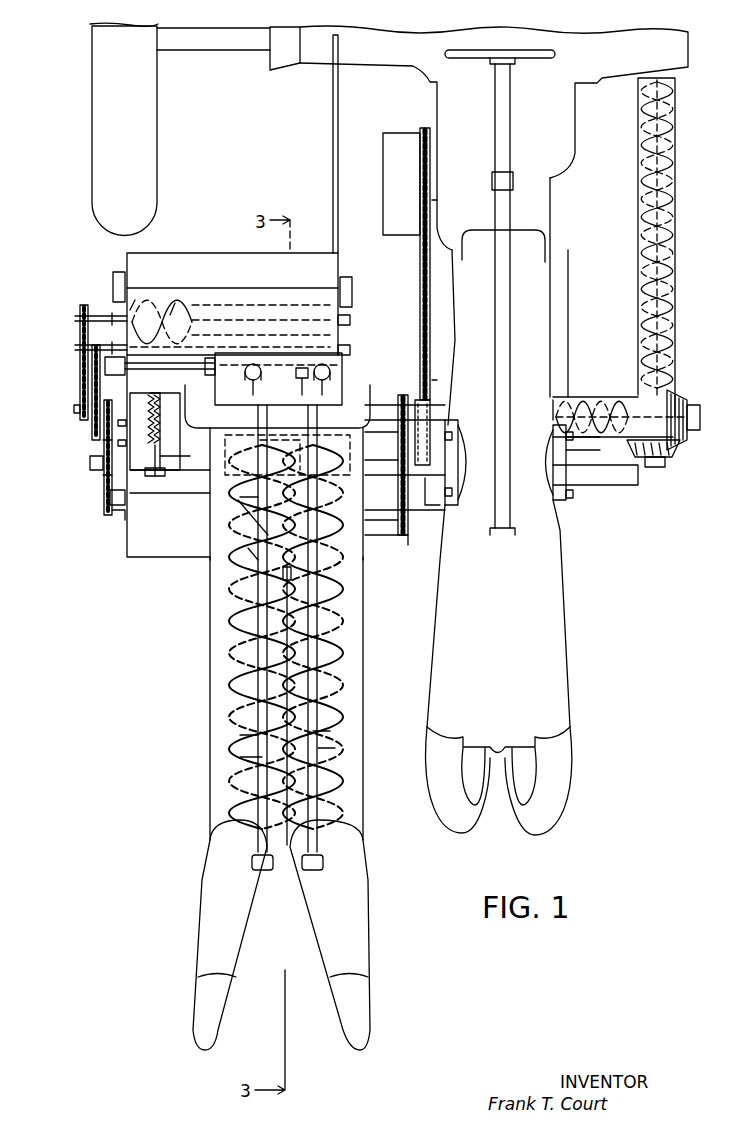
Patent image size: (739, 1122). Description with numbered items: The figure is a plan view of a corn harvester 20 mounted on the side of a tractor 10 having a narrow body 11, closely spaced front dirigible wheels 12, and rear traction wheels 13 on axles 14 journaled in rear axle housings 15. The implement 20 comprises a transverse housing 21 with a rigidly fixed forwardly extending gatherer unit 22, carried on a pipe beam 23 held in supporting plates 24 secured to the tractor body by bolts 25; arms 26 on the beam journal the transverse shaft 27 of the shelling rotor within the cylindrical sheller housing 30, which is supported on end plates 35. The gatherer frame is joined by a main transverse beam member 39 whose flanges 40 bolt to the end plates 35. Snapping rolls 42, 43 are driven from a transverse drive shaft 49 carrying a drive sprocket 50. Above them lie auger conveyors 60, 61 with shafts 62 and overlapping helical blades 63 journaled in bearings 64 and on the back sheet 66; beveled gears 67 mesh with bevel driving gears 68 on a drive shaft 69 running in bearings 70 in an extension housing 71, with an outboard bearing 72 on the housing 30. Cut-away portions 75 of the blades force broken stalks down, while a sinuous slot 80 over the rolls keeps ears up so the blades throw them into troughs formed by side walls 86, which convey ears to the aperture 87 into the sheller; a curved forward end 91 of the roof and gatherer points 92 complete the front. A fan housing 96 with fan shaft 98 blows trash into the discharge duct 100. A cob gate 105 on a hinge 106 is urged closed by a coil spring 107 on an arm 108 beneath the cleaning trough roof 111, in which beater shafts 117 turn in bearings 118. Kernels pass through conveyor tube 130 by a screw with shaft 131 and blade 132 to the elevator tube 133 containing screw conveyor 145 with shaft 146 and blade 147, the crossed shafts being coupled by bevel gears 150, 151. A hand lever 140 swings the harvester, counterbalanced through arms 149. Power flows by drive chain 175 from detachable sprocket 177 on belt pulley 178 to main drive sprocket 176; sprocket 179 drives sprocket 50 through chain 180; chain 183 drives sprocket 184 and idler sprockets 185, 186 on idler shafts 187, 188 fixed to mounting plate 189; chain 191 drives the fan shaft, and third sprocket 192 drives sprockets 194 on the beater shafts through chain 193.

The tractor 10 is at (608, 592).
The tractor body 11 is at (508, 646).
The front dirigible wheels 12 is at (525, 818).
The rear traction wheels 13 is at (98, 218).
The axles 14 is at (216, 43).
The rear axle housings 15 is at (381, 60).
The corn harvester 20 is at (107, 607).
The housing 21 is at (100, 292).
The gatherer unit 22 is at (197, 692).
The pipe beam 23 is at (91, 463).
The supporting plates 24 is at (458, 462).
The bolts 25 is at (453, 440).
The arms 26 is at (110, 448).
The transverse shaft 27 is at (162, 398).
The sheller housing 30 is at (210, 472).
The end plates 35 is at (346, 276).
The main transverse beam member 39 is at (210, 500).
The flanges 40 is at (128, 502).
The snapping roll 42 is at (256, 734).
The snapping roll 43 is at (330, 749).
The transverse drive shaft 49 is at (380, 536).
The drive sprocket 50 is at (406, 538).
The auger conveyor 60 is at (249, 635).
The auger conveyor 61 is at (333, 617).
The auger shafts 62 is at (256, 706).
The helical blade 63 is at (262, 796).
The journal bearings 64 is at (252, 865).
The back sheet 66 is at (248, 423).
The beveled gears 67 is at (299, 380).
The bevel driving gears 68 is at (249, 379).
The transverse drive shaft 69 is at (183, 361).
The bearings 70 is at (221, 382).
The extension housing 71 is at (352, 350).
The outboard bearing 72 is at (125, 366).
The cut-away portions 75 is at (291, 664).
The slot 80 is at (256, 758).
The side walls 86 is at (210, 614).
The aperture 87 is at (301, 441).
The curved forward end 91 is at (250, 548).
The gatherer point 92 is at (205, 961).
The fan housing 96 is at (190, 556).
The fan shaft 98 is at (118, 512).
The discharge duct 100 is at (224, 280).
The cob gate 105 is at (170, 420).
The hinge 106 is at (158, 478).
The coil spring 107 is at (172, 442).
The arm 108 is at (168, 472).
The roof 111 is at (283, 293).
The supporting shaft 117 is at (231, 322).
The bearings 118 is at (350, 322).
The conveyor tube 130 is at (568, 392).
The screw conveyor shaft 131 is at (600, 395).
The helical blade 132 is at (588, 398).
The elevator tube 133 is at (638, 238).
The hand-actuated lever 140 is at (333, 100).
The screw conveyor 145 is at (666, 296).
The elevator shaft 146 is at (668, 222).
The helical blade 147 is at (668, 253).
The arms 149 is at (113, 280).
The bevel gear 150 is at (683, 394).
The bevel gear 151 is at (665, 462).
The drive chain 175 is at (420, 282).
The main drive sprocket 176 is at (431, 420).
The detachable sprocket 177 is at (431, 172).
The belt pulley 178 is at (400, 226).
The sprocket 179 is at (398, 426).
The chain 180 is at (398, 472).
The chain 183 is at (92, 379).
The sprocket 184 is at (92, 362).
The sprocket 185 is at (84, 438).
The sprocket 186 is at (90, 441).
The idler shaft 187 is at (74, 410).
The idler shaft 188 is at (120, 425).
The mounting plate 189 is at (120, 443).
The chain 191 is at (104, 484).
The third sprocket 192 is at (71, 429).
The chain 193 is at (80, 333).
The sprockets 194 is at (80, 312).